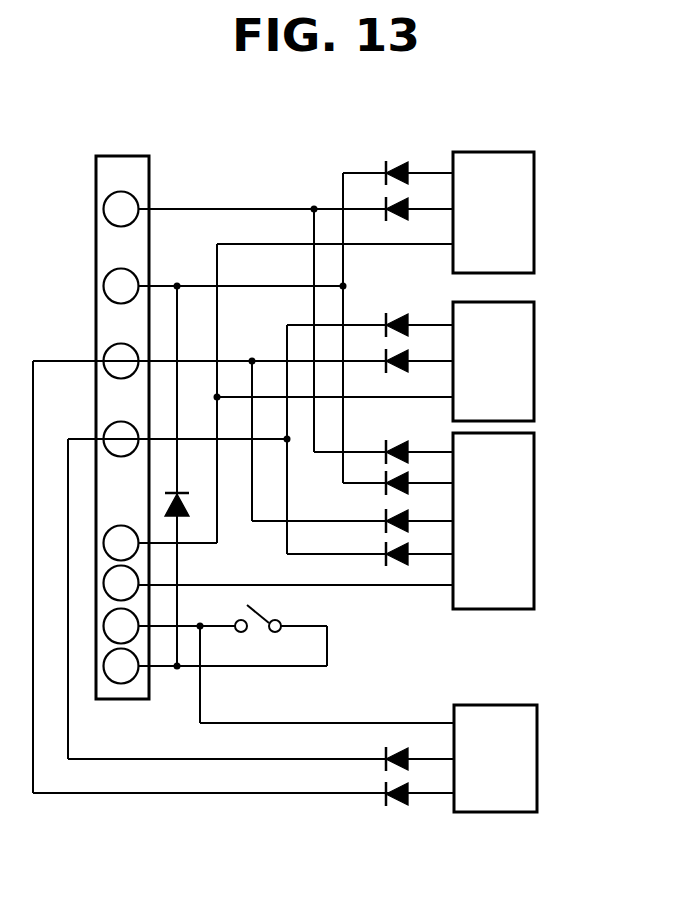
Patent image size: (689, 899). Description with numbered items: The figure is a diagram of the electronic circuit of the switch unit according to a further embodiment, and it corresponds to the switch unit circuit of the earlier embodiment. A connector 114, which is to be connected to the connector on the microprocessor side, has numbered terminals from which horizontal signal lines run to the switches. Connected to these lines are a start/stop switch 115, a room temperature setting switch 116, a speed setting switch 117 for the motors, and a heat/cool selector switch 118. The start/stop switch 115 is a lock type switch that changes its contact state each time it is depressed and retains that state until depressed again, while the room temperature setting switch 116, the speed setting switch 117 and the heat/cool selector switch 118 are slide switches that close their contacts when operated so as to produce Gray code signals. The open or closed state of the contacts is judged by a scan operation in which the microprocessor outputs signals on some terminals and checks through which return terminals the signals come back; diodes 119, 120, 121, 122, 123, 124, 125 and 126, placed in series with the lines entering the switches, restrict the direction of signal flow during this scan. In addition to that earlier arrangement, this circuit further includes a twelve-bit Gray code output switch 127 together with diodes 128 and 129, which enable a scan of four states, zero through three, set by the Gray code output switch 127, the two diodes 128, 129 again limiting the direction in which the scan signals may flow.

The connector 114 is at (120, 699).
The start/stop switch 115 is at (262, 617).
The room temperature setting switch 116 is at (534, 517).
The speed setting switch 117 is at (534, 362).
The heat/cool selector switch 118 is at (534, 213).
The diode 119 is at (400, 168).
The diode 120 is at (413, 200).
The diode 121 is at (398, 318).
The diode 122 is at (415, 350).
The diode 123 is at (408, 446).
The diode 124 is at (388, 490).
The diode 125 is at (388, 528).
The diode 126 is at (388, 560).
The 12-bit Gray code output switch 127 is at (537, 758).
The diode 128 is at (390, 755).
The diode 129 is at (402, 808).